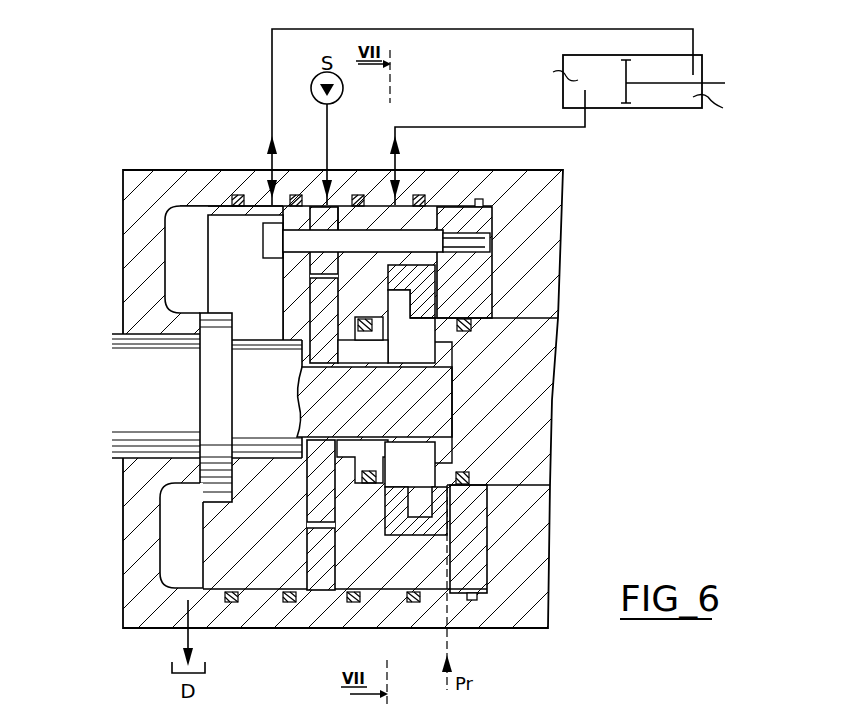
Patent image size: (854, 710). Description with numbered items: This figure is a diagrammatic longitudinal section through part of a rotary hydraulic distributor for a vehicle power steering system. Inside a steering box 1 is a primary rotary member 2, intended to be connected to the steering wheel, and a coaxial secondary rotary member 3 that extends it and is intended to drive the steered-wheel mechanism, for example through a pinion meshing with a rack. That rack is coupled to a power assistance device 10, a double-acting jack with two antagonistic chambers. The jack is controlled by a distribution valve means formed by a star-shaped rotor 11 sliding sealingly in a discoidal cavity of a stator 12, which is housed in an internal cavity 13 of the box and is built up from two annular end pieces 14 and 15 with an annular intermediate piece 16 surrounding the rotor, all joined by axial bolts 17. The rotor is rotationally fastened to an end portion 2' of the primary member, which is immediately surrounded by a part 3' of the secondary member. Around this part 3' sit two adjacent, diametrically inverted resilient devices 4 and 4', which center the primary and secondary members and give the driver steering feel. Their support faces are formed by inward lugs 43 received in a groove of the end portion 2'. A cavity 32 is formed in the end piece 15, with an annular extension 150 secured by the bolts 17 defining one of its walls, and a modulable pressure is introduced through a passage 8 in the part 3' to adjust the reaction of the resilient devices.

The steering box 1 is at (181, 154).
The primary rotary member 2 is at (189, 407).
The end portion of the primary member 2' is at (427, 355).
The secondary rotary member 3 is at (499, 347).
The part of the secondary member 3' is at (362, 485).
The resilient device 4 is at (427, 355).
The resilient device 4' is at (427, 355).
The passage 8 is at (440, 493).
The power assistance device 10 is at (636, 126).
The star-shaped rotor 11 is at (317, 325).
The stator 12 is at (262, 612).
The internal cavity 13 is at (187, 210).
The annular end piece 14 is at (242, 554).
The annular end piece 15 is at (375, 583).
The annular intermediate piece 16 is at (317, 582).
The bolts 17 is at (487, 242).
The cavity 32 is at (470, 284).
The lugs 43 is at (390, 348).
The annular extension 150 is at (476, 575).